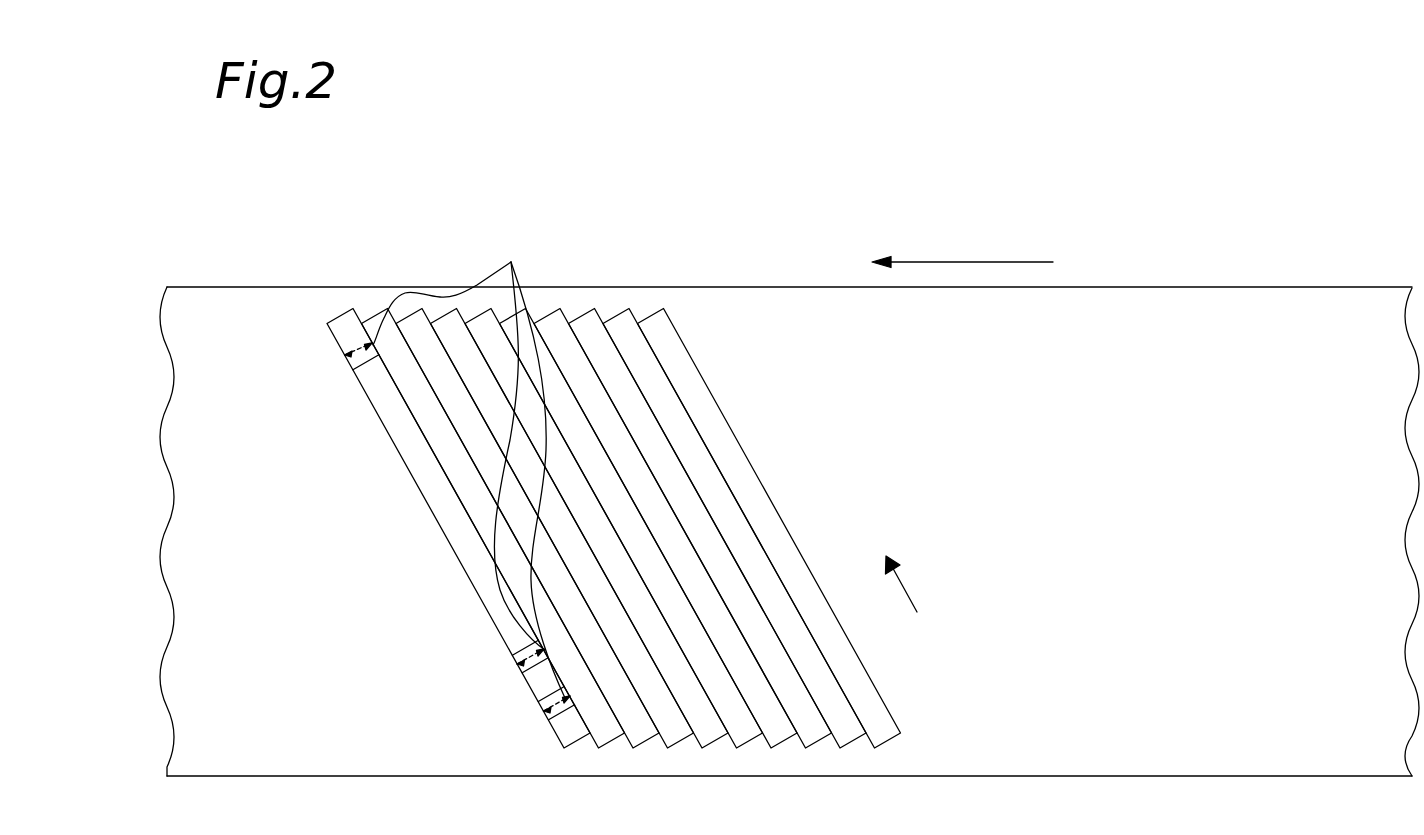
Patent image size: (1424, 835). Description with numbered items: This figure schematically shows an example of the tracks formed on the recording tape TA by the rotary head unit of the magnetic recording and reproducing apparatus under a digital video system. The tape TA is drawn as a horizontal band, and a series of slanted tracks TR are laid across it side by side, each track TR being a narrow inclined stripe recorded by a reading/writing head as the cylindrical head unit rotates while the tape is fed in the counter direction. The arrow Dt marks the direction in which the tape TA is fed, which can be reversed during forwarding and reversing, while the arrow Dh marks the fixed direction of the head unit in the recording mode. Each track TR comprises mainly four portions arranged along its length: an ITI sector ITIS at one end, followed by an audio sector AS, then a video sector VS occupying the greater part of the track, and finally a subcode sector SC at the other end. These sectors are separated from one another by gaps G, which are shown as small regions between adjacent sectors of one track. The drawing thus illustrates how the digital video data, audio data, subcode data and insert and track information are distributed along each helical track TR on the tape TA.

The recording tape TA is at (1263, 300).
The track TR is at (766, 498).
The video sector VS is at (434, 515).
The subcode sector SC is at (331, 338).
The audio sector AS is at (538, 692).
The ITI sector ITIS is at (563, 745).
The gap G is at (469, 463).
The tape feeding direction Dt is at (962, 246).
The head unit direction Dh is at (921, 584).